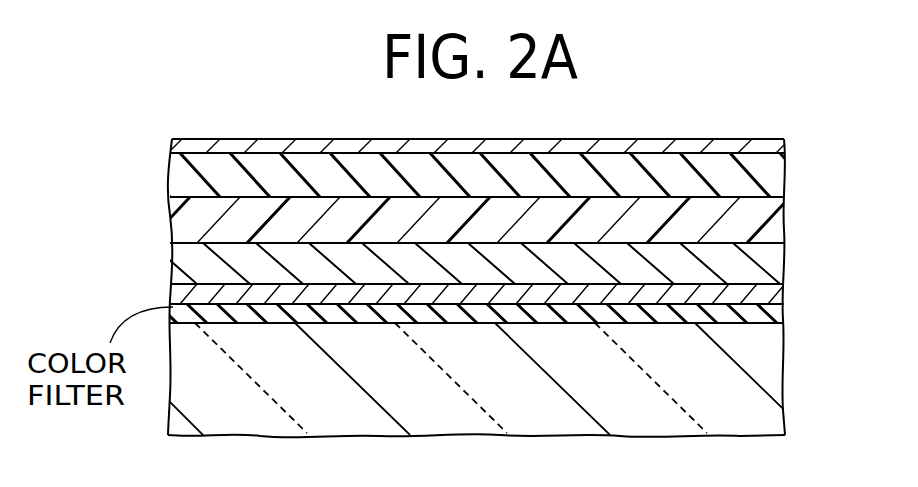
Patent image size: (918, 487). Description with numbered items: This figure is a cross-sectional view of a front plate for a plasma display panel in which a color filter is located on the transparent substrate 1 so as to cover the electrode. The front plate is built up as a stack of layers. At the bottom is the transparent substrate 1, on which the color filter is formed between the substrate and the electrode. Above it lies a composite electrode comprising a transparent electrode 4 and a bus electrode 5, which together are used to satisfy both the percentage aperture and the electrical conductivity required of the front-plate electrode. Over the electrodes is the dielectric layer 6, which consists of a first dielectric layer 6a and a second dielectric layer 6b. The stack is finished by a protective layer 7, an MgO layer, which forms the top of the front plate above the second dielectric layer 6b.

The transparent substrate 1 is at (768, 376).
The transparent electrode 4 is at (768, 299).
The bus electrode 5 is at (768, 262).
The dielectric layer 6 is at (496, 198).
The first dielectric layer 6a is at (772, 212).
The second dielectric layer 6b is at (768, 174).
The protective layer 7 is at (785, 148).